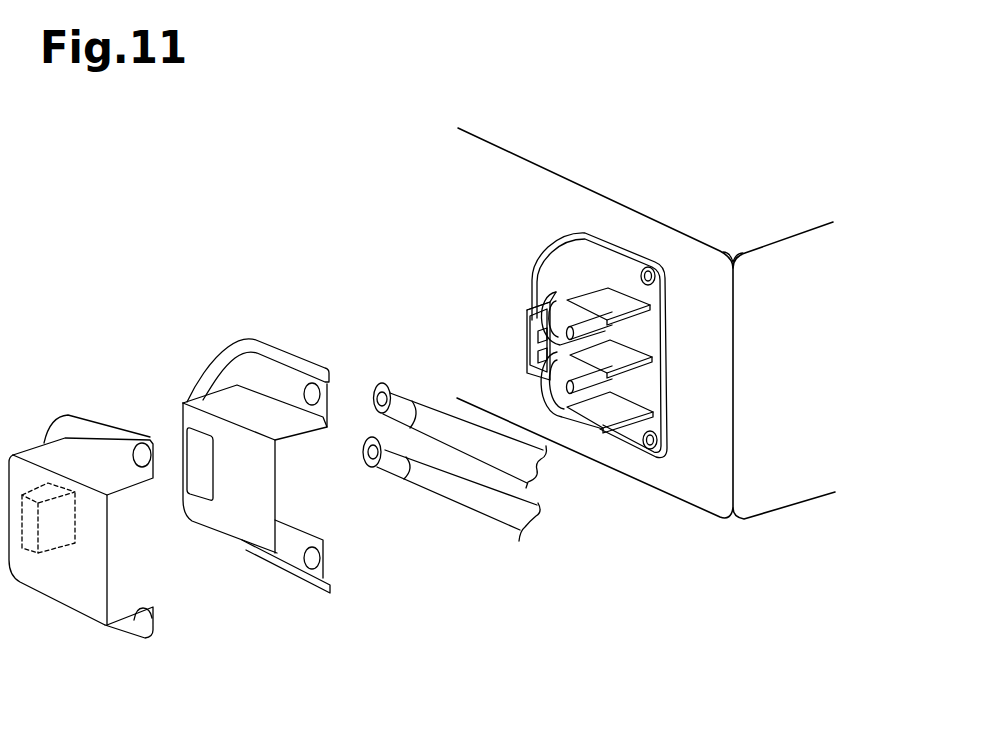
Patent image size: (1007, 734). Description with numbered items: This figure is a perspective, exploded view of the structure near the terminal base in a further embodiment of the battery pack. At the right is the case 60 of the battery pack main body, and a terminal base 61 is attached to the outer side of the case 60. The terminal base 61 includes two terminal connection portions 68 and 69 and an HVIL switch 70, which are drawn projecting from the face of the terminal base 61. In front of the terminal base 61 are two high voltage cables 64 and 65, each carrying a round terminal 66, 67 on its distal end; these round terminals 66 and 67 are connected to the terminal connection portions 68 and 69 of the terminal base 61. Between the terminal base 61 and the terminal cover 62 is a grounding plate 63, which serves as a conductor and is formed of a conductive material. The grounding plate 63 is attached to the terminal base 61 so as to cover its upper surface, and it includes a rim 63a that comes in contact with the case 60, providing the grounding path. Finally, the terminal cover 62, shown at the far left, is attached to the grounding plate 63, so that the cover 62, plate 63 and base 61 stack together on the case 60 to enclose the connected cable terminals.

The case 60 is at (787, 510).
The terminal base 61 is at (608, 253).
The terminal cover 62 is at (83, 463).
The grounding plate 63 is at (217, 404).
The rim 63a is at (280, 353).
The high voltage cable 64 is at (443, 427).
The high voltage cable 65 is at (452, 500).
The round terminal 66 is at (378, 383).
The round terminal 67 is at (366, 468).
The terminal connection portion 68 is at (573, 320).
The terminal connection portion 69 is at (593, 392).
The HVIL switch 70 is at (533, 342).